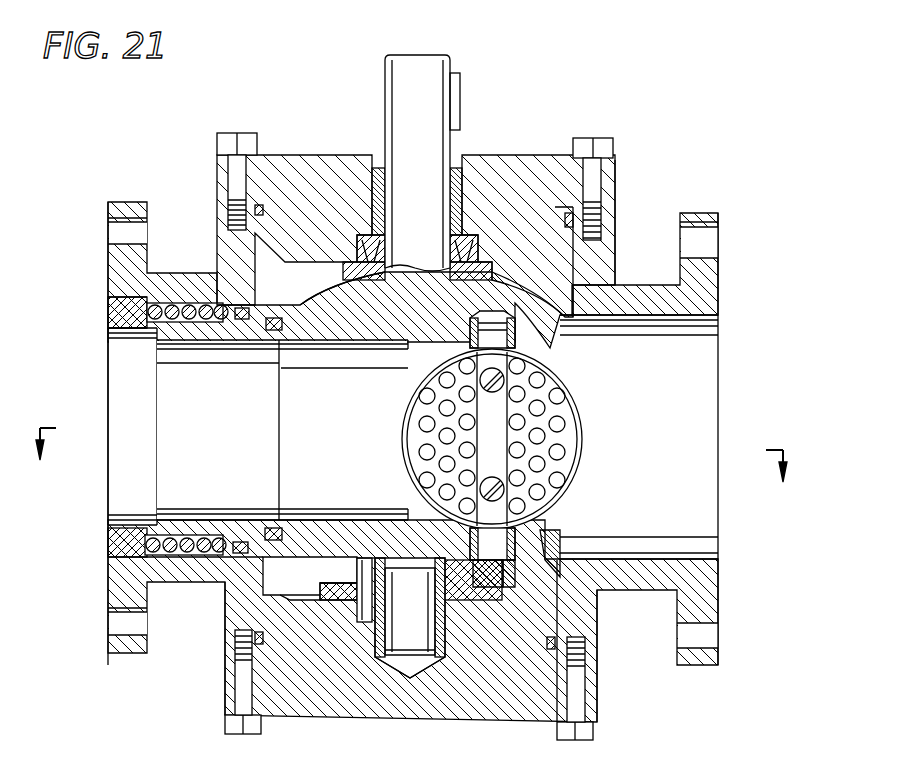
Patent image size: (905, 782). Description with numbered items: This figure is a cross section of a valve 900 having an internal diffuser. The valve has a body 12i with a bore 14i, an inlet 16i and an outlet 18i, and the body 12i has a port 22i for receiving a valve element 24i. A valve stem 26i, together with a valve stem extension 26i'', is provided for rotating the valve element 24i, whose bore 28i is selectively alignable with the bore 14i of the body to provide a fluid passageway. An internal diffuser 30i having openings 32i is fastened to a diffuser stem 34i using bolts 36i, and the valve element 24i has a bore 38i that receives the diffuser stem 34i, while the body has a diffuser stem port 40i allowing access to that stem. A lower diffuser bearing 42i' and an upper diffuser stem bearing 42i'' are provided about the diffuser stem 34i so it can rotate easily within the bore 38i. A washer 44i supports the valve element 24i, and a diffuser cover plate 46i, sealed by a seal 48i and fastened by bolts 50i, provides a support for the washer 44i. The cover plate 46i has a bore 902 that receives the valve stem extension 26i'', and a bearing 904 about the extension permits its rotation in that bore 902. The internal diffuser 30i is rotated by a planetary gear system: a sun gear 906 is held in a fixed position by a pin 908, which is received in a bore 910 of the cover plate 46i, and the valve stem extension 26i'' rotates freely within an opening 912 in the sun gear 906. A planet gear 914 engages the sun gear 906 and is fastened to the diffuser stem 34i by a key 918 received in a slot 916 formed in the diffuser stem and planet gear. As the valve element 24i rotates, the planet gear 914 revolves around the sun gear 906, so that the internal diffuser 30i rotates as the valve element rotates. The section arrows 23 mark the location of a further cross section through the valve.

The valve 900 is at (636, 92).
The body 12i is at (720, 290).
The bore 14i is at (238, 436).
The inlet 16i is at (108, 365).
The outlet 18i is at (720, 405).
The port 22i is at (263, 205).
The valve element 24i is at (332, 302).
The valve stem 26i is at (422, 141).
The lower stem / trunnion 26i'' is at (390, 667).
The bore 28i is at (330, 436).
The internal diffuser 30i is at (585, 450).
The openings 32i is at (560, 412).
The diffuser stem 34i is at (520, 335).
The bolts 36i is at (480, 378).
The bore 38i is at (494, 310).
The diffuser stem port 40i is at (278, 645).
The lower diffuser bearing 42i' is at (557, 516).
The upper diffuser stem bearing 42i'' is at (612, 238).
The washer 44i is at (280, 598).
The diffuser cover plate 46i is at (597, 690).
The seal 48i is at (262, 640).
The bolts 50i is at (593, 732).
The section line 23- 23 is at (412, 466).
The bore 902 is at (420, 670).
The bearing 904 is at (440, 603).
The sun gear 906 is at (380, 555).
The pin 908 is at (357, 575).
The bore 910 is at (345, 605).
The opening 912 is at (377, 552).
The planet gear 914 is at (408, 556).
The slot 916 is at (548, 545).
The key 918 is at (548, 545).